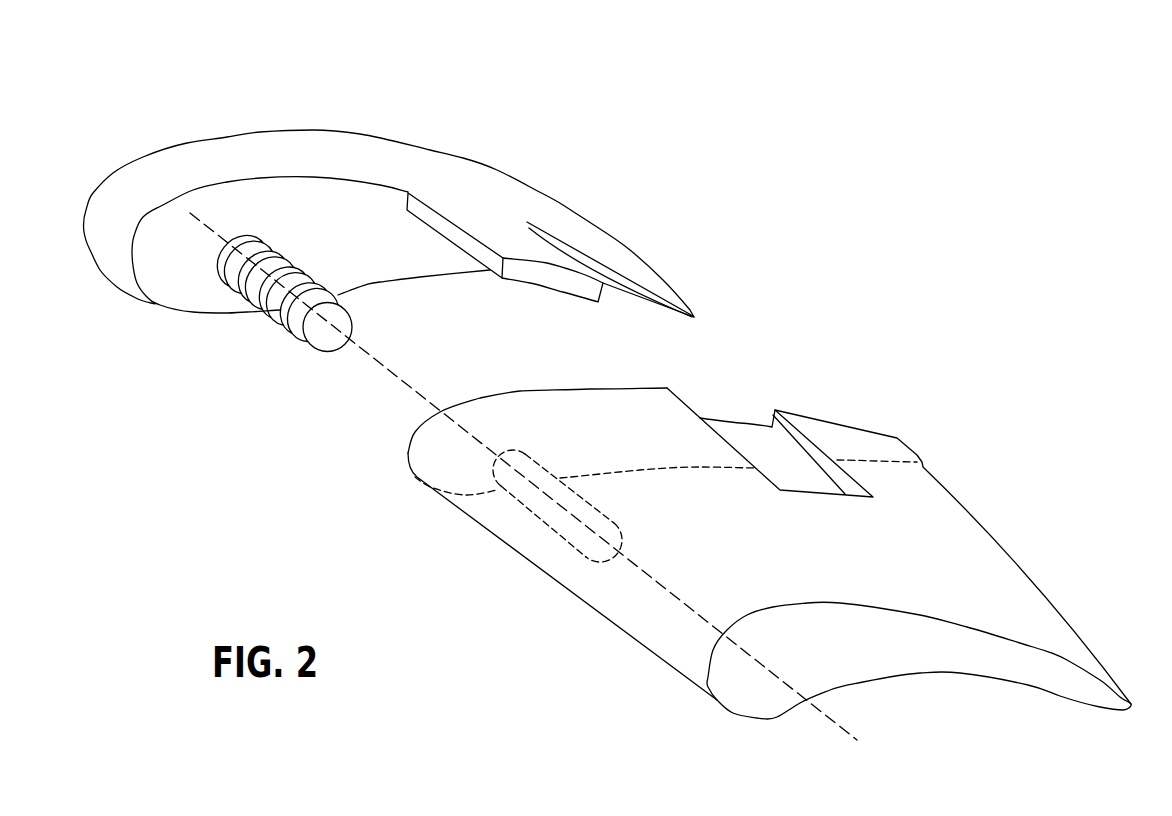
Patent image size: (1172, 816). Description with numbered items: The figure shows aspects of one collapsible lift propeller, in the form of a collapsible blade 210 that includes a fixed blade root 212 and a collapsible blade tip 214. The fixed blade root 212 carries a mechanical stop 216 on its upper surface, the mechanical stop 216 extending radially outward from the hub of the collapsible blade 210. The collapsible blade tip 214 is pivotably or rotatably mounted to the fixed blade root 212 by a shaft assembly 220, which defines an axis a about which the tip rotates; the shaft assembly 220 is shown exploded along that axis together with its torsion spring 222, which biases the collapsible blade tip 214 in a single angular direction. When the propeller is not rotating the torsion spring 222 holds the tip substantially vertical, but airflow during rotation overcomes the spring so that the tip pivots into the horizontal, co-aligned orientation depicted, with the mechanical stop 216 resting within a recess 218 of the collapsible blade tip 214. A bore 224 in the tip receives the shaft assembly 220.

The collapsible blade 210 is at (535, 60).
The fixed blade root 212 is at (273, 88).
The collapsible blade tip 214 is at (1040, 457).
The mechanical stop 216 is at (498, 228).
The recess 218 is at (742, 392).
The shaft assembly 220 is at (327, 331).
The torsion spring 222 is at (255, 303).
The bore 224 is at (563, 515).